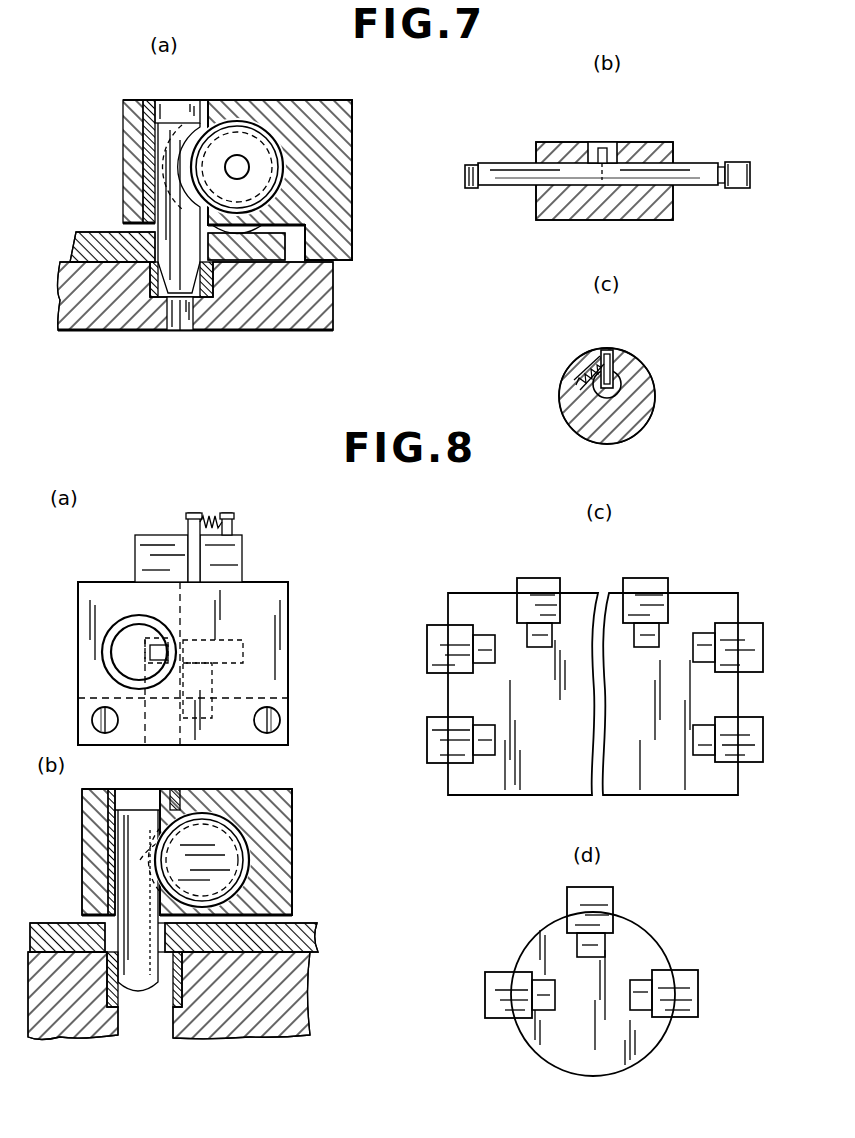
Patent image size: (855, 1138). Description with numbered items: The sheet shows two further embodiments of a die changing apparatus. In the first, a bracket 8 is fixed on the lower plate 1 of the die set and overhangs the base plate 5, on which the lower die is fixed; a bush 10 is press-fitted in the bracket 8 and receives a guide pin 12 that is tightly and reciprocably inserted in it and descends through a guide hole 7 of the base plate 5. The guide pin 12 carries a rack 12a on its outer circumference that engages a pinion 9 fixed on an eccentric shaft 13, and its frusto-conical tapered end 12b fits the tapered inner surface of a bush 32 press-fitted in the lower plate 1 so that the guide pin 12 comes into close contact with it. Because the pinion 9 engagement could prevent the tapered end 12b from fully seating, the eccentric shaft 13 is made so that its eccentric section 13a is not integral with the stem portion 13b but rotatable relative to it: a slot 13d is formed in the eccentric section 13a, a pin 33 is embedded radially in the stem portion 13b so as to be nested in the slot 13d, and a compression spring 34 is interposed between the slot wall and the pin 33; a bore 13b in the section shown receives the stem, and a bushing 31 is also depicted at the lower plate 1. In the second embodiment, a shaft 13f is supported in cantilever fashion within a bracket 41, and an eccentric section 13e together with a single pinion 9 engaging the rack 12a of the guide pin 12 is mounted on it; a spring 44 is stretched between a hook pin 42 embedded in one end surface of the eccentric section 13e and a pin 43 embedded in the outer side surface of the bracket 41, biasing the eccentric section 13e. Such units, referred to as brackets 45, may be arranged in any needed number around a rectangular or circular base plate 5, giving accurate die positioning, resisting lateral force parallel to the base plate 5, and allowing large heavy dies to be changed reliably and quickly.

In FIG. 7, the lower plate 1 is at (93, 320).
In FIG. 8, the lower plate 1 is at (303, 988).
In FIG. 7, the base plate 5 is at (100, 238).
In FIG. 8, the base plate 5 is at (300, 936).
In FIG. 7, the guide hole 7 is at (163, 217).
In FIG. 7, the bracket 8 is at (333, 106).
In FIG. 7, the pinion 9 is at (262, 186).
In FIG. 8, the pinion 9 is at (238, 653).
In FIG. 7, the bush 10 is at (123, 130).
In FIG. 8, the bush 10 is at (106, 661).
In FIG. 8, the guide pin 12 is at (128, 883).
In FIG. 7, the rack 12a is at (200, 100).
In FIG. 8, the rack 12a is at (158, 645).
In FIG. 7, the tapered end 12b is at (186, 336).
In FIG. 7, the eccentric shaft 13 is at (681, 110).
In FIG. 7, the eccentric section 13a is at (237, 233).
In FIG. 7, the stem portion 13b is at (244, 167).
In FIG. 7, the slot 13d is at (592, 141).
In FIG. 8, the eccentric section 13e is at (140, 556).
In FIG. 8, the shaft 13f is at (208, 608).
In FIG. 7, the bushing 31 is at (201, 322).
In FIG. 7, the bush 32 is at (165, 330).
In FIG. 7, the pin 33 is at (606, 149).
In FIG. 7, the compression spring 34 is at (581, 361).
In FIG. 8, the bracket 41 is at (274, 814).
In FIG. 8, the hook pin 42 is at (234, 523).
In FIG. 8, the pin 43 is at (190, 526).
In FIG. 8, the spring 44 is at (212, 516).
In FIG. 8, the bracket 45 is at (270, 564).